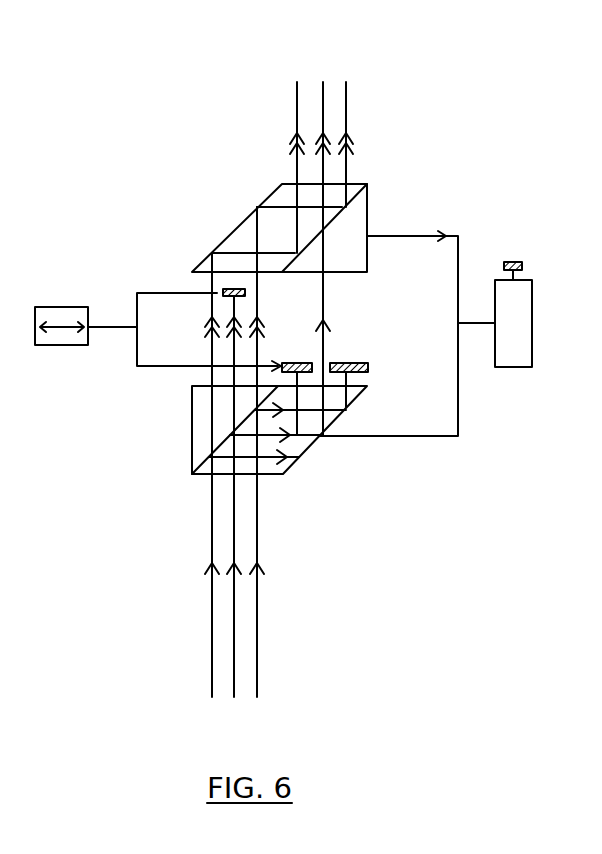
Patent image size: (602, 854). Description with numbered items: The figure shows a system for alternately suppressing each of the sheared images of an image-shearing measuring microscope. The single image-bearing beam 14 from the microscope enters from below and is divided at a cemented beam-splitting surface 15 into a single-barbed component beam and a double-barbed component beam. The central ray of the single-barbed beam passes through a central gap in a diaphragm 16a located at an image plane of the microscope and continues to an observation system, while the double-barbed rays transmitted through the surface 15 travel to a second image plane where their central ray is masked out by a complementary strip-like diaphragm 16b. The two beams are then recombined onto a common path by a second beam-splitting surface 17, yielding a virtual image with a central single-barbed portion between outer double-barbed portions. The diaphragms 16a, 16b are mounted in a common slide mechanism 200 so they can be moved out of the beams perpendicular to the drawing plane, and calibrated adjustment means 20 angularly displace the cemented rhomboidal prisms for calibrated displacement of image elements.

The image-bearing beam 14 is at (232, 630).
The cemented beam-splitting surface 15 is at (206, 465).
The diaphragm 16a is at (350, 365).
The strip-like diaphragm 16b is at (213, 300).
The second beam-splitting surface 17 is at (326, 215).
The calibrated adjustment means 20 is at (533, 302).
The slide mechanism 200 is at (50, 346).